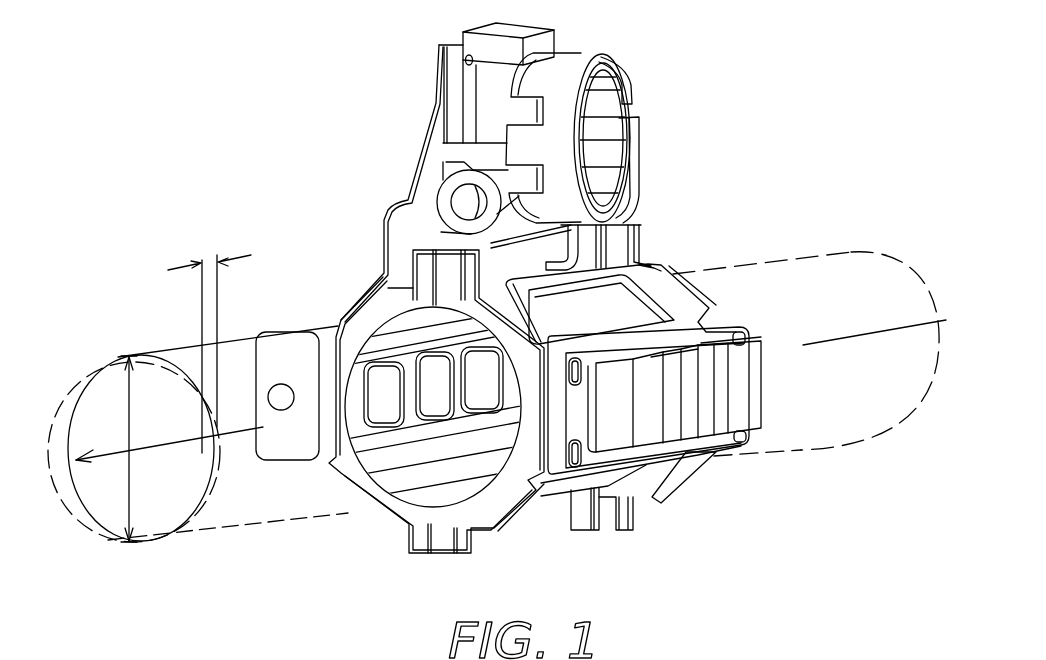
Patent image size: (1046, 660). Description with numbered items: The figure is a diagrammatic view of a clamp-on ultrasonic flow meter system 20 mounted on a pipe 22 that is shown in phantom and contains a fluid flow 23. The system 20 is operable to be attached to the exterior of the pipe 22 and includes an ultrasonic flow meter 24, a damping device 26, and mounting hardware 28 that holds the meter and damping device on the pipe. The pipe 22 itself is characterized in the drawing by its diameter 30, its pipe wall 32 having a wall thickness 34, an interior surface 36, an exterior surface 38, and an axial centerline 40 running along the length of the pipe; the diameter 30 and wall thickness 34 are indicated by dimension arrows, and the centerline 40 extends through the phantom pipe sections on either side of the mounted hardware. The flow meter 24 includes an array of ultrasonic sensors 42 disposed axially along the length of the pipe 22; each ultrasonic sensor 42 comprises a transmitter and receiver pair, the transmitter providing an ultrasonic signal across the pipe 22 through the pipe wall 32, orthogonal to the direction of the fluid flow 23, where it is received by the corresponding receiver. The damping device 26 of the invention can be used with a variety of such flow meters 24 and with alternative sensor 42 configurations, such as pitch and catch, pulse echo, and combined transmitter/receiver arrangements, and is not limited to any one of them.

The ultrasonic flow meter system 20 is at (338, 125).
The pipe 22 is at (247, 528).
The fluid flow 23 is at (95, 427).
The ultrasonic flow meter 24 is at (677, 510).
The damping device 26 is at (642, 290).
The mounting hardware 28 is at (387, 305).
The diameter 30 is at (127, 487).
The pipe wall 32 is at (152, 532).
The wall thickness 34 is at (197, 263).
The interior surface 36 is at (147, 397).
The exterior surface 38 is at (785, 290).
The axial centerline 40 is at (905, 327).
The ultrasonic sensor 42 is at (757, 430).